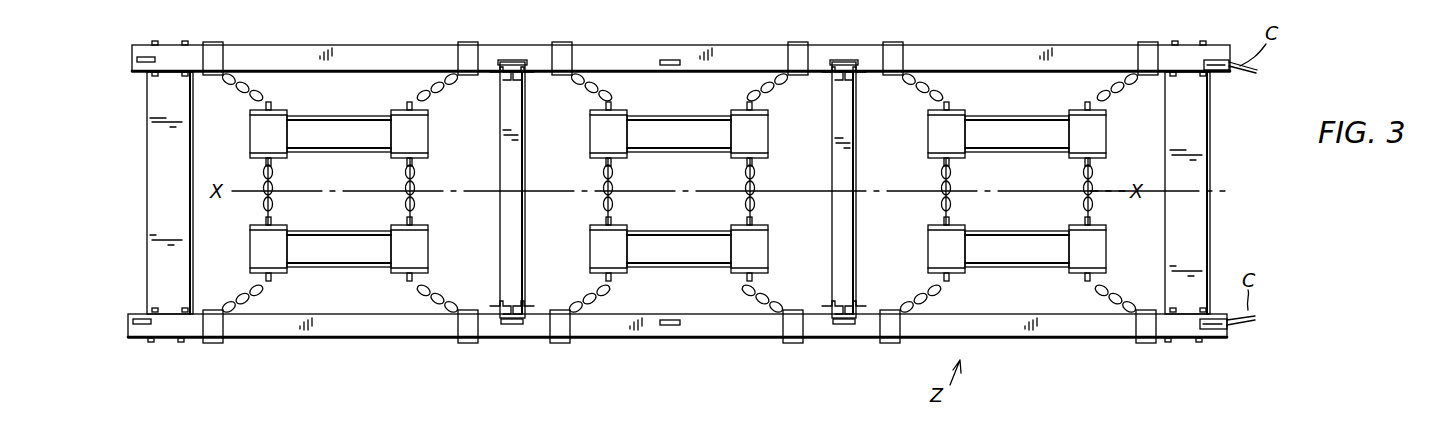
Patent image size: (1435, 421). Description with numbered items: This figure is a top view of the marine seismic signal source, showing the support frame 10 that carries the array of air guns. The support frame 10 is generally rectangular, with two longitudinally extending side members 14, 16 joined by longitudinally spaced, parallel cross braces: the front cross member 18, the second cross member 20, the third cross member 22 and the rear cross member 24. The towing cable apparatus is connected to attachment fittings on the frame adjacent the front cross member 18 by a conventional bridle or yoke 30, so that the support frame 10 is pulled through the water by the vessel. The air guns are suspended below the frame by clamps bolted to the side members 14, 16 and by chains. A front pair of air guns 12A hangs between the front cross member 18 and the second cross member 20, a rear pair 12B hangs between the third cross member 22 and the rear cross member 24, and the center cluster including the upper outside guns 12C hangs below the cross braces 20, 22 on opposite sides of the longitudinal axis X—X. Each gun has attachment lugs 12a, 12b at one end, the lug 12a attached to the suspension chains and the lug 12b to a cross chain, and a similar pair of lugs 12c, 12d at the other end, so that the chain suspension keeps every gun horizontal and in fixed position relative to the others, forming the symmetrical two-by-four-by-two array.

The support frame 10 is at (279, 350).
The front pair of air guns 12A is at (1013, 255).
The rear pair of air guns 12B is at (350, 193).
The upper outside air guns 12C is at (690, 268).
The attachment lug 12a is at (272, 282).
The attachment lug 12b is at (274, 104).
The attachment lug 12c is at (405, 283).
The attachment lug 12d is at (405, 104).
The side member 14 is at (1097, 330).
The side member 16 is at (1012, 45).
The front cross member 18 is at (1203, 193).
The second cross member 20 is at (840, 305).
The third cross member 22 is at (512, 305).
The rear cross member 24 is at (150, 226).
The yoke fitting 30 is at (1222, 72).